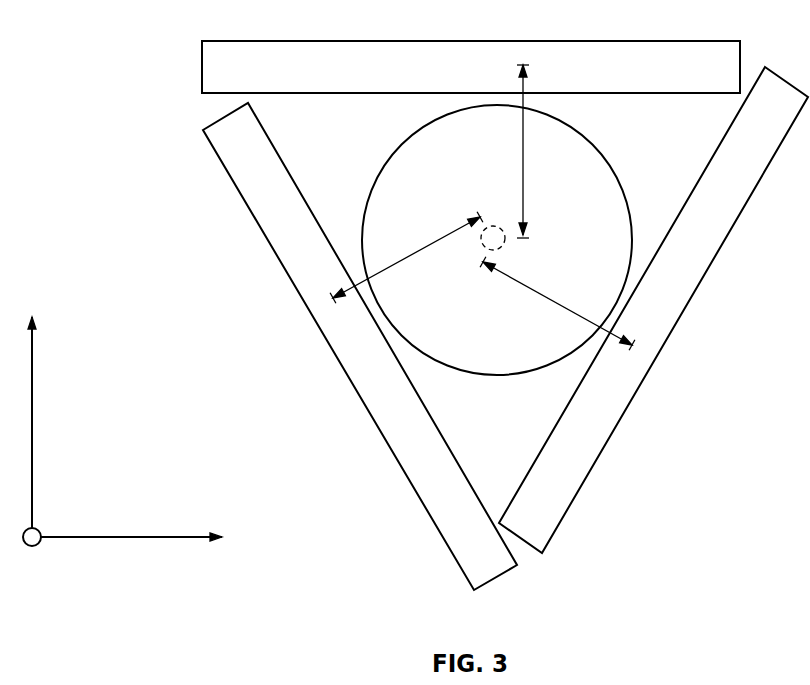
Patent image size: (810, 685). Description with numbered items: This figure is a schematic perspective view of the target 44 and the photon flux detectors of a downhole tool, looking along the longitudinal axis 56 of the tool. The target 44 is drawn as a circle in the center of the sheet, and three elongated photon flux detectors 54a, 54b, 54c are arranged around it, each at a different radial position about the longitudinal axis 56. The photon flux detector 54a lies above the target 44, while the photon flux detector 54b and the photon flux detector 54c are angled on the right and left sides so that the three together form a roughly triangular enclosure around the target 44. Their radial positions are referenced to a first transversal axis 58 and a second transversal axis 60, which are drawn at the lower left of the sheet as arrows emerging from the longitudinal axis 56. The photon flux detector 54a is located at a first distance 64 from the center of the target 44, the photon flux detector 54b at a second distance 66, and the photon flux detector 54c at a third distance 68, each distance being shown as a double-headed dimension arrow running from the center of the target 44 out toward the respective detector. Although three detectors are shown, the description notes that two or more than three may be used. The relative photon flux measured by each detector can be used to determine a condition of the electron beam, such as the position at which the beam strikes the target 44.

The target 44 is at (585, 140).
The photon flux detector 54a is at (675, 41).
The photon flux detector 54b is at (677, 322).
The photon flux detector 54c is at (340, 360).
The longitudinal axis 56 is at (40, 530).
The first transversal axis 58 is at (34, 427).
The second transversal axis 60 is at (135, 535).
The first distance 64 is at (522, 158).
The second distance 66 is at (530, 290).
The third distance 68 is at (442, 236).